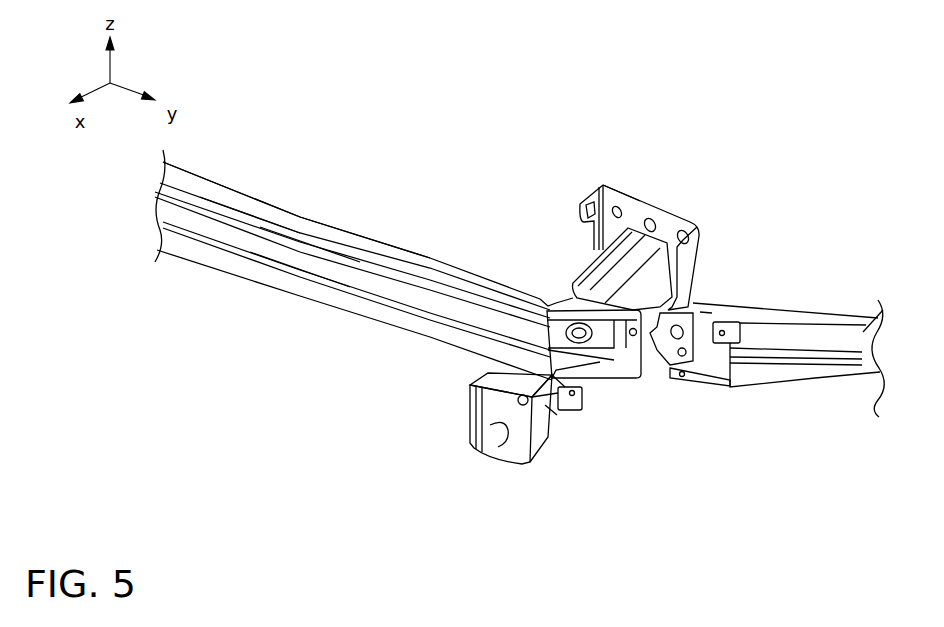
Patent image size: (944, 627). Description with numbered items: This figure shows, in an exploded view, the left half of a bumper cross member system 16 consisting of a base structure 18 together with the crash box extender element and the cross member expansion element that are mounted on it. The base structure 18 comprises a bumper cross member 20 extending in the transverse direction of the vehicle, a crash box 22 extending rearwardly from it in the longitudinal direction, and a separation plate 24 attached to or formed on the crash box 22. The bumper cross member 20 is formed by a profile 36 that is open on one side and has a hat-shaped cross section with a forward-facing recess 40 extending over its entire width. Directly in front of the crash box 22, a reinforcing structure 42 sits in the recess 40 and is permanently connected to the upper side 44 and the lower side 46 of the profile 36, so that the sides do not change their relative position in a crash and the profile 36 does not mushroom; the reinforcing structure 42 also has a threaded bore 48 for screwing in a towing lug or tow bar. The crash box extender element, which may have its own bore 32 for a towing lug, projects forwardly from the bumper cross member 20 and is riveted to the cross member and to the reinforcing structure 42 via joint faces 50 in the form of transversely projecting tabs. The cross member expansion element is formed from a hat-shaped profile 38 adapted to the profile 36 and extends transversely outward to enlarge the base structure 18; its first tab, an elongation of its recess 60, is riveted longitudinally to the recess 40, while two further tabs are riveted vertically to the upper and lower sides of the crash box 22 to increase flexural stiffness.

The bumper cross member system 16 is at (468, 118).
The base structure 18 is at (572, 168).
The bumper cross member 20 is at (363, 295).
The crash box 22 is at (592, 246).
The separation plate 24 is at (666, 222).
The bore 32 is at (492, 451).
The profile 36 is at (228, 238).
The profile 38 is at (866, 326).
The recess 40 is at (201, 246).
The reinforcing structure 42 is at (545, 327).
The upper side 44 is at (303, 230).
The lower side 46 is at (291, 289).
The bore 48 is at (551, 352).
The joint faces 50 is at (547, 420).
The recess 60 is at (865, 370).